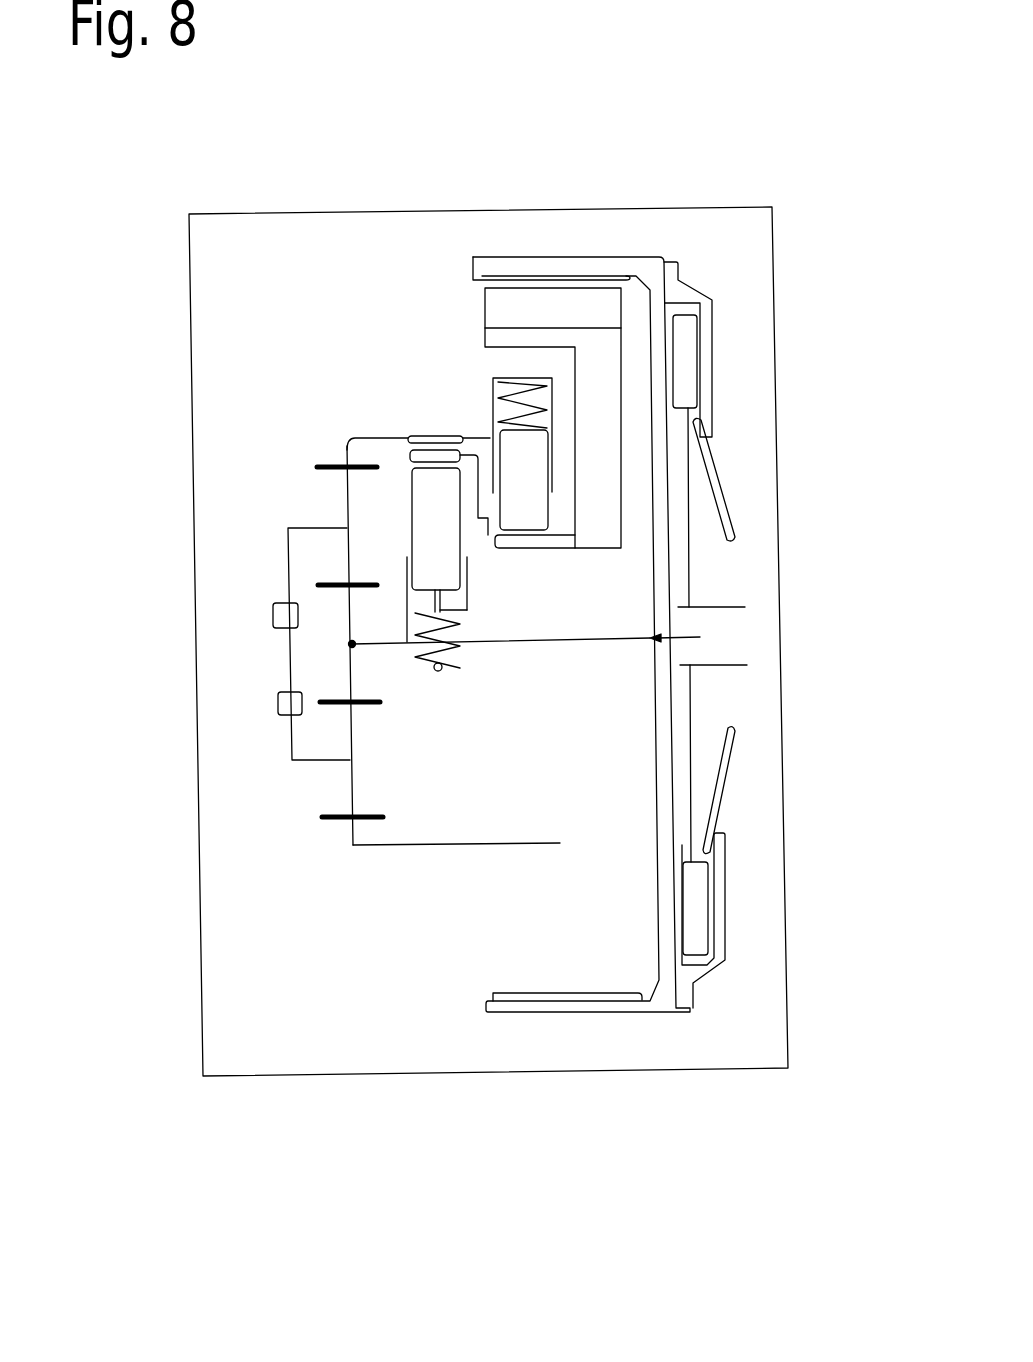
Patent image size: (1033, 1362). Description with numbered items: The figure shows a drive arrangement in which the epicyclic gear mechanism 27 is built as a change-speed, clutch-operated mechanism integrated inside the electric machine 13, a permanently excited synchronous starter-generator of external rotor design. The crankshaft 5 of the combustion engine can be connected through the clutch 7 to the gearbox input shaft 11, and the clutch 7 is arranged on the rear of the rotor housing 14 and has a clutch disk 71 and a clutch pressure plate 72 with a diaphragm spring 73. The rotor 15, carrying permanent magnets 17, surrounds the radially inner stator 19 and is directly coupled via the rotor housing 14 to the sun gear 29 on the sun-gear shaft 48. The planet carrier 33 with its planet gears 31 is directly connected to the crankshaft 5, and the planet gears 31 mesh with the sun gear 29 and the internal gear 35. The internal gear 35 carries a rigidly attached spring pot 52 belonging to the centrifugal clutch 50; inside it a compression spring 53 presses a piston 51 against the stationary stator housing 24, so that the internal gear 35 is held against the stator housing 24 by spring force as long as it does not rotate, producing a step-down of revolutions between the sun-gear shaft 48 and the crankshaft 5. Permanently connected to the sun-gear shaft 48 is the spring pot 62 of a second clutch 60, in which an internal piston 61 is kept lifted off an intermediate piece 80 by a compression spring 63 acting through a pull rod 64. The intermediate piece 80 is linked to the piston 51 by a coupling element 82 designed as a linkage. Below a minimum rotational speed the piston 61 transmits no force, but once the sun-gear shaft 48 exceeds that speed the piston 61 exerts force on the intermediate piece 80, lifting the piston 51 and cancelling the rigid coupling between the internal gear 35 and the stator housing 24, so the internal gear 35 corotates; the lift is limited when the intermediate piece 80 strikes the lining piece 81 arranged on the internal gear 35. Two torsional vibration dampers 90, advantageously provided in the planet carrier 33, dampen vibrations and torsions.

The crankshaft 5 is at (288, 645).
The clutch 7 is at (733, 385).
The gearbox input shaft 11 is at (717, 647).
The electric machine 13 is at (572, 864).
The rotor housing 14 is at (670, 937).
The rotor 15 is at (583, 1010).
The permanent magnets 17 is at (542, 992).
The stator 19 is at (540, 283).
The stator housing 24 is at (594, 389).
The epicyclic gear mechanism 27 is at (326, 879).
The sun gear 29 is at (349, 594).
The planet gears 31 is at (347, 483).
The planet carrier 33 is at (288, 558).
The internal gear 35 is at (347, 448).
The sun-gear shaft 48 is at (455, 673).
The clutch 50 is at (560, 513).
The piston 51 is at (517, 470).
The spring pot 52 is at (493, 383).
The compression spring 53 is at (493, 435).
The clutch 60 is at (468, 592).
The internal piston 61 is at (433, 567).
The spring pot 62 is at (407, 600).
The compression spring 63 is at (418, 658).
The pull rod 64 is at (436, 671).
The clutch disk 71 is at (695, 912).
The clutch pressure plate 72 is at (720, 869).
The diaphragm spring 73 is at (720, 780).
The intermediate piece 80 is at (428, 456).
The lining piece 81 is at (432, 441).
The coupling element 82 is at (488, 533).
The torsional vibration dampers 90 is at (273, 617).